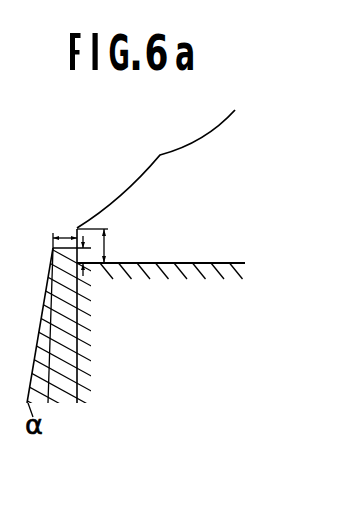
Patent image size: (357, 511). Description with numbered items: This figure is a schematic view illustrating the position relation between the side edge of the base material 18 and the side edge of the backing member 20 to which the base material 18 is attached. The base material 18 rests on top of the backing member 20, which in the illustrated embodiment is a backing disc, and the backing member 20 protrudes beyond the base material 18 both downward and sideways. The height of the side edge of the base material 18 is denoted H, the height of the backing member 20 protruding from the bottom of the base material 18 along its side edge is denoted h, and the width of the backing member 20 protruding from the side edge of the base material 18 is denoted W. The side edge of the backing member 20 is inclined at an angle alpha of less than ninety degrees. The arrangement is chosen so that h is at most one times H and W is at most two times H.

The base material 18 is at (152, 188).
The backing member 20 is at (100, 362).
The width of the backing member protruding from the side edge of the base material W is at (64, 236).
The height of the side edge of the base material H is at (108, 239).
The height of the backing member protruding from the bottom of the base material h is at (84, 265).